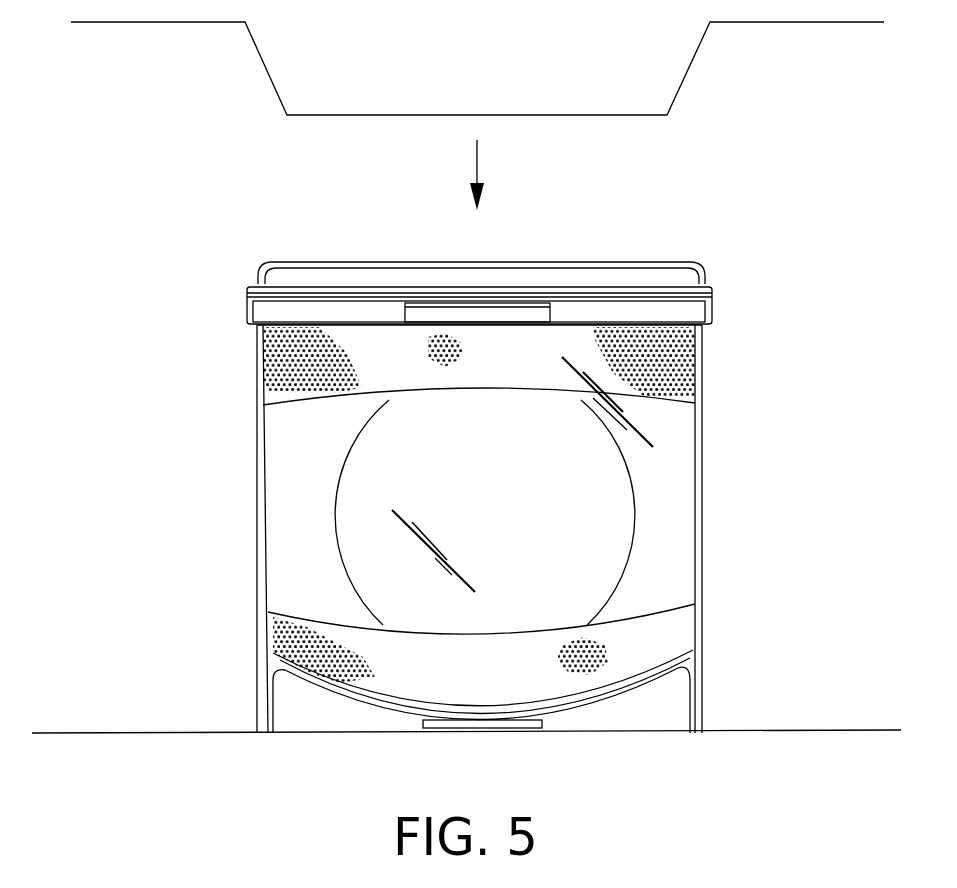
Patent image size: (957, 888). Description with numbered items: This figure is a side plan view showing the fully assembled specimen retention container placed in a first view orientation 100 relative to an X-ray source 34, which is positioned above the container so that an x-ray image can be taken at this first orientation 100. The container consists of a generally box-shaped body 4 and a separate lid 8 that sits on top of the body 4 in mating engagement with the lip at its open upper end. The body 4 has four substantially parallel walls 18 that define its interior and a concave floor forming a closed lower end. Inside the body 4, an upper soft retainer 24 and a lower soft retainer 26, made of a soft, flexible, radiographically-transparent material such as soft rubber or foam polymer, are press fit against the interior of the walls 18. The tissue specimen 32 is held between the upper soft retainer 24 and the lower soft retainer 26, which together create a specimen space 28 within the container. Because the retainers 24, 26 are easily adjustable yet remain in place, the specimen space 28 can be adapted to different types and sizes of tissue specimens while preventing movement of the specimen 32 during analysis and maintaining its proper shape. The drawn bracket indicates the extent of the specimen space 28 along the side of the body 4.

The first view orientation 100 is at (168, 166).
The X-ray source 34 is at (346, 115).
The lid 8 is at (657, 272).
The body 4 is at (265, 383).
The upper soft retainer 24 is at (690, 377).
The walls 18 is at (702, 460).
The specimen space 28 is at (249, 410).
The tissue specimen 32 is at (620, 525).
The lower soft retainer 26 is at (672, 647).